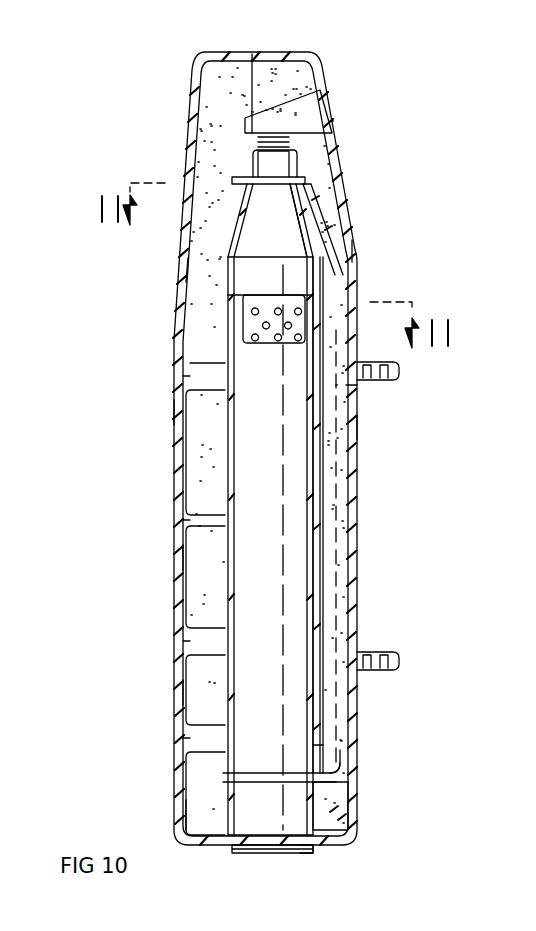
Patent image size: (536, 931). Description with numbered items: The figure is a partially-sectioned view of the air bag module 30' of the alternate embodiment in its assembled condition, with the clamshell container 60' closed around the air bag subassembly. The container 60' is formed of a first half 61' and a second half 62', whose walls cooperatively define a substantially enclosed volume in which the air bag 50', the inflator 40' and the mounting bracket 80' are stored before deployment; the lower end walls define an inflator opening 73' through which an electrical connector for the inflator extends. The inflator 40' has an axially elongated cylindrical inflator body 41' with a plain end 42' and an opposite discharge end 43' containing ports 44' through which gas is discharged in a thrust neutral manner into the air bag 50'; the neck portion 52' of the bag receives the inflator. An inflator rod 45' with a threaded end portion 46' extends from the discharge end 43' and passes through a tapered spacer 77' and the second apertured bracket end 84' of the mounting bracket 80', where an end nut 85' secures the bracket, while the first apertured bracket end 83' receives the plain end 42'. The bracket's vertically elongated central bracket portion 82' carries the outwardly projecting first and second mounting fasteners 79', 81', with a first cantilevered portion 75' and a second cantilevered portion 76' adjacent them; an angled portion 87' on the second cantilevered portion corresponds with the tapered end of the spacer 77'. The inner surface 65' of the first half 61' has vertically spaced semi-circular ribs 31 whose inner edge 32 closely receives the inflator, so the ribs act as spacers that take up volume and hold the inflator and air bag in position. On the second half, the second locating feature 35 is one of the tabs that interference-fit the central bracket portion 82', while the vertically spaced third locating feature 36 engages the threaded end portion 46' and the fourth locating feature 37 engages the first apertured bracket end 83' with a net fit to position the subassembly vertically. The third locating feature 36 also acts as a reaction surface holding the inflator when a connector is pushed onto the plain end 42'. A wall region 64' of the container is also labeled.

The module 30' is at (204, 448).
The ribs 31 is at (237, 380).
The inner edge 32 is at (245, 350).
The second locating feature 35 is at (344, 468).
The third locating feature 36 is at (290, 105).
The fourth locating feature 37 is at (330, 793).
The inflator 40' is at (365, 853).
The inflator body 41' is at (334, 509).
The plain end 42' is at (240, 856).
The discharge end 43' is at (338, 288).
The ports 44' is at (205, 312).
The inflator rod 45' is at (270, 102).
The threaded end portion 46' is at (186, 123).
The air bag 50' is at (396, 550).
The neck portion 52' is at (384, 515).
The clamshell container 60' is at (130, 264).
The first half 61' is at (113, 409).
The second half 62' is at (417, 430).
The lower left wall section 64' is at (130, 555).
The inner surface 65' is at (144, 689).
The inflator opening 73' is at (166, 819).
The first cantilevered portion 75' is at (395, 762).
The second cantilevered portion 76' is at (400, 249).
The spacer 77' is at (350, 214).
The first mounting fastener 79' is at (420, 659).
The mounting bracket 80' is at (217, 779).
The second mounting fastener 81' is at (434, 369).
The central bracket portion 82' is at (404, 400).
The first apertured bracket end 83' is at (375, 780).
The second apertured bracket end 84' is at (206, 165).
The end nut 85' is at (203, 147).
The angled portion 87' is at (359, 229).